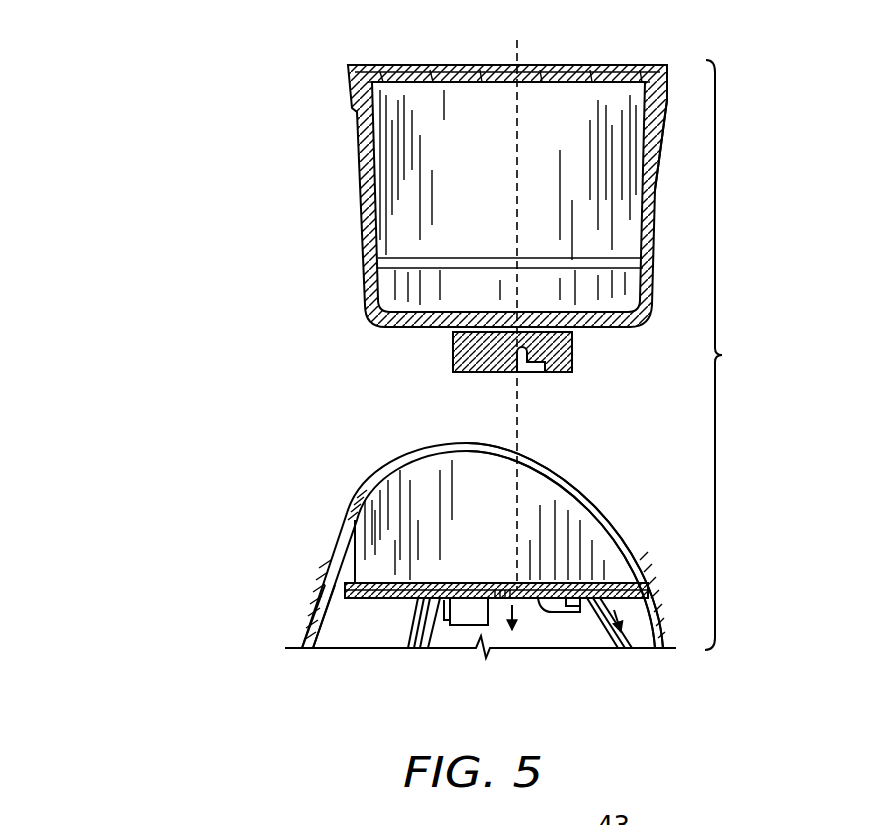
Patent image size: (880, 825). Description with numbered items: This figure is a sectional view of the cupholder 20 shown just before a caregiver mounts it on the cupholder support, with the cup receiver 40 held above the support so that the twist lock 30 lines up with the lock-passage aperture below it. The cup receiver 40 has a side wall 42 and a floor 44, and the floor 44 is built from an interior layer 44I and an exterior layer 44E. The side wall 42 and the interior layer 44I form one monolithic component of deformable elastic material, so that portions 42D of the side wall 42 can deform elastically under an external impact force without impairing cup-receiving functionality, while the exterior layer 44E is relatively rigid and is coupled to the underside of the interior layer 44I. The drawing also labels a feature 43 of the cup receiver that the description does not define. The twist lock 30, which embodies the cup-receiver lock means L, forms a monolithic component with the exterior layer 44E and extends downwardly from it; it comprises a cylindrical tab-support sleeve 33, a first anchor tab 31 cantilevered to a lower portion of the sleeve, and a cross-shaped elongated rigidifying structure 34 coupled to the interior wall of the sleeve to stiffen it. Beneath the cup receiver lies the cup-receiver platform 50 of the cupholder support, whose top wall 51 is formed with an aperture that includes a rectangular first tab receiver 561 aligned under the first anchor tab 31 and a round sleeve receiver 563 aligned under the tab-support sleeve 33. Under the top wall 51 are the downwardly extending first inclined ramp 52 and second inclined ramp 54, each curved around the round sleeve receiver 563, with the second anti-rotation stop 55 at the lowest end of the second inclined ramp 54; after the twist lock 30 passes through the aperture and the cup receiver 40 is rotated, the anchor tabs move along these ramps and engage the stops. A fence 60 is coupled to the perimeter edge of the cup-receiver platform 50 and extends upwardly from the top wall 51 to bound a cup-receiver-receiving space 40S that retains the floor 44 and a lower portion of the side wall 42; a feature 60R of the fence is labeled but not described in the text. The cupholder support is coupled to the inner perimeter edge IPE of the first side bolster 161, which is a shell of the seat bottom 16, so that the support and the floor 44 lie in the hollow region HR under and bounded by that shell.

The cupholder 20 is at (438, 369).
The cup receiver 40 is at (458, 218).
The side wall 42 is at (355, 173).
The deformable portions of side wall 42D is at (655, 187).
The rim 43 is at (612, 118).
The floor 44 is at (406, 311).
The interior layer 44I is at (416, 300).
The exterior layer 44E is at (378, 325).
The twist lock 30 is at (503, 383).
The first anchor tab 31 is at (530, 374).
The tab-support sleeve 33 is at (575, 357).
The cross-shaped elongated rigidifying structure 34 is at (472, 372).
The cup-receiver lock means L is at (450, 378).
The cup-receiver-receiving space 40S is at (398, 520).
The fence 60 is at (526, 545).
The dome inner surface 60R is at (545, 500).
The inner perimeter edge IPE is at (540, 468).
The cup-receiver platform 50 is at (501, 632).
The top wall 51 is at (648, 592).
The first inclined ramp 52 is at (548, 618).
The second inclined ramp 54 is at (430, 607).
The second anti-rotation stop 55 is at (440, 602).
The first tab receiver 561 is at (522, 600).
The round sleeve receiver 563 is at (463, 598).
The seat bottom 16 is at (300, 628).
The first side bolster 161 is at (318, 583).
The hollow region HR is at (345, 624).